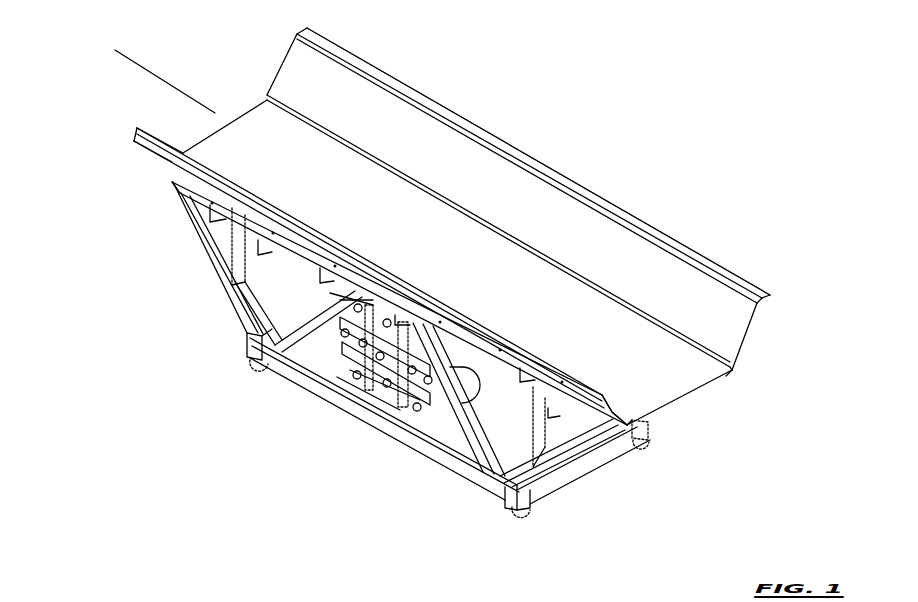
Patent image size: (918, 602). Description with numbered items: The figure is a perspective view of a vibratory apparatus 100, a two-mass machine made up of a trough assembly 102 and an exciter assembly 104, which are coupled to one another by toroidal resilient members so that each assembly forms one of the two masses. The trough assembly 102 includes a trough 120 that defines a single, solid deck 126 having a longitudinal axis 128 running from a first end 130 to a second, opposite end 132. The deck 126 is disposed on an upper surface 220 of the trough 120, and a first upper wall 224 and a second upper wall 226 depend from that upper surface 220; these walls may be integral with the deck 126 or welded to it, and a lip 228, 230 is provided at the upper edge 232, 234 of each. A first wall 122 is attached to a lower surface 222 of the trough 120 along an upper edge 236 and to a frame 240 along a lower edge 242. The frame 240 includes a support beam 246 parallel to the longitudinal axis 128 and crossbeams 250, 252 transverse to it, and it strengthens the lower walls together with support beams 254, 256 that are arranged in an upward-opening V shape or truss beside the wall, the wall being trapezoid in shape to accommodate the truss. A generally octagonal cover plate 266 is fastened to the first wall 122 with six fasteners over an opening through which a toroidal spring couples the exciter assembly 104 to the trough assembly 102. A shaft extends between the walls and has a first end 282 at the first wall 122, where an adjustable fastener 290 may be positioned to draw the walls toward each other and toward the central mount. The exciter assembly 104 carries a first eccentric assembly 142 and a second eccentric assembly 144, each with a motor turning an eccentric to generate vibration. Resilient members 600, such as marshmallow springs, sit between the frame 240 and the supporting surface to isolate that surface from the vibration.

The vibratory apparatus 100 is at (649, 128).
The trough assembly 102 is at (439, 226).
The exciter assembly 104 is at (537, 430).
The trough 120 is at (675, 380).
The first wall 122 is at (445, 420).
The deck 126 is at (522, 327).
The longitudinal axis 128 is at (137, 62).
The first end 130 is at (206, 126).
The second end 132 is at (728, 382).
The first eccentric assembly 142 is at (318, 278).
The second eccentric assembly 144 is at (518, 392).
The upper surface 220 is at (628, 428).
The lower surface 222 is at (647, 441).
The first upper wall 224 is at (163, 162).
The second upper wall 226 is at (740, 337).
The lip 228 is at (127, 133).
The lip 230 is at (772, 294).
The upper edge 232 is at (137, 126).
The upper edge 234 is at (764, 300).
The upper edge 236 is at (318, 293).
The frame 240 is at (458, 464).
The lower edge 242 is at (300, 355).
The support beam 246 is at (365, 408).
The crossbeam 250 is at (243, 333).
The crossbeam 252 is at (545, 482).
The support beam 254 is at (194, 216).
The support beam 256 is at (566, 440).
The cover plate 266 is at (387, 392).
The first end 282 is at (362, 373).
The fastener 290 is at (360, 380).
The resilient members 600 is at (250, 362).